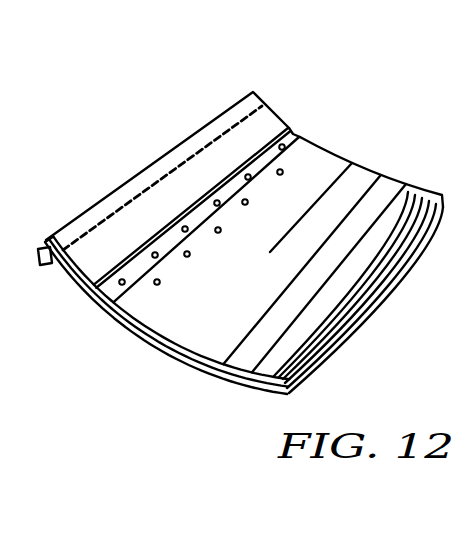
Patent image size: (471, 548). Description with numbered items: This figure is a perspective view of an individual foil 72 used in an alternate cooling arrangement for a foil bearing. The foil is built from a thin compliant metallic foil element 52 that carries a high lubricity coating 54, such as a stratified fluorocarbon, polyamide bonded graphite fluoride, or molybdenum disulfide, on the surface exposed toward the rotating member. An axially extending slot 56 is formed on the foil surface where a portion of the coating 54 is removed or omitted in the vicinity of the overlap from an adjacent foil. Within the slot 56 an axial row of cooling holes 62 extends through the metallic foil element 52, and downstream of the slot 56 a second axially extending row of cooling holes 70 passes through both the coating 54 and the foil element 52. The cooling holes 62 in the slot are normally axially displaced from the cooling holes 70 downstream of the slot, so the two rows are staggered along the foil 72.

The metallic foil element 52 is at (64, 271).
The high lubricity coating 54 is at (227, 336).
The slot 56 is at (297, 136).
The cooling holes 62 is at (156, 258).
The cooling holes 70 is at (189, 255).
The individual foil 72 is at (393, 170).